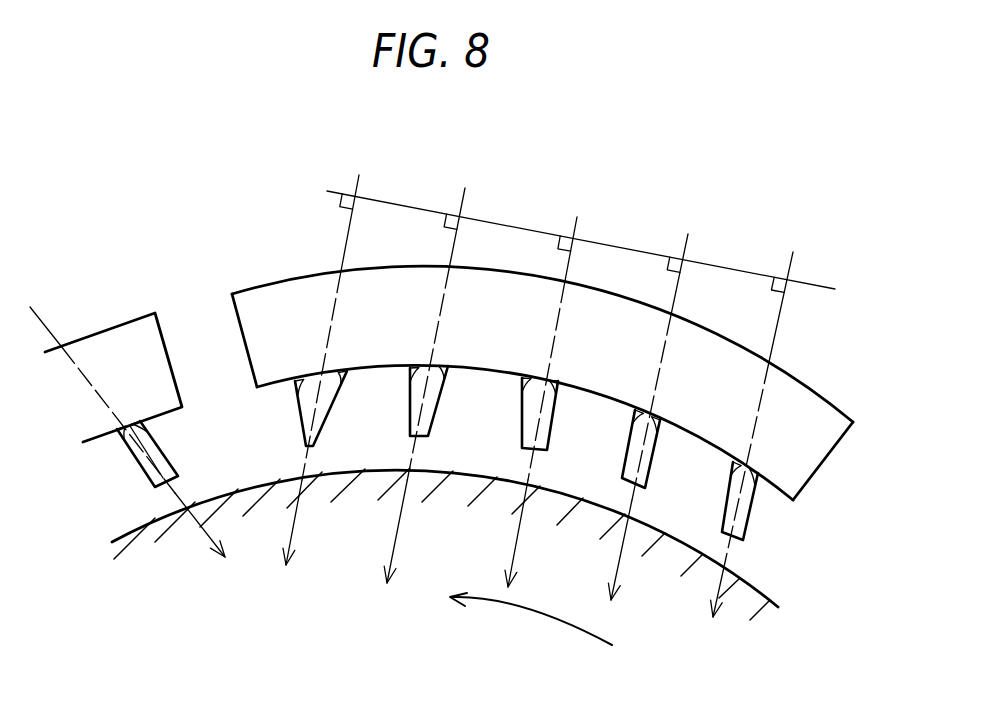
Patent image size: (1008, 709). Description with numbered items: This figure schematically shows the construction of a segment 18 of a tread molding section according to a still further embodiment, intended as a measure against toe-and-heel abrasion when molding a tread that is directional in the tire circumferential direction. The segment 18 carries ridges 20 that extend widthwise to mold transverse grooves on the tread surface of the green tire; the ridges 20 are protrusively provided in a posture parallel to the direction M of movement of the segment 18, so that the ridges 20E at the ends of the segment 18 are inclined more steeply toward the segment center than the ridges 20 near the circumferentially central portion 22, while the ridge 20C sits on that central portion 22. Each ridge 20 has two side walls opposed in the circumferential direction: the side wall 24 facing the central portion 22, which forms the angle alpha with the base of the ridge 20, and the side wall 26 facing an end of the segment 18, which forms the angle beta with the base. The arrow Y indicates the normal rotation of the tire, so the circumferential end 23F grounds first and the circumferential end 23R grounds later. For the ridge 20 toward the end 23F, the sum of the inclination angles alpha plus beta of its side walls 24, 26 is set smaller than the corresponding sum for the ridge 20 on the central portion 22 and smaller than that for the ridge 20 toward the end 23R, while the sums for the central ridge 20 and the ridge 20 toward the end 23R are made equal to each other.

The segment 18 is at (106, 325).
The circumferentially central portion 22 is at (585, 303).
The circumferential end 23F is at (268, 290).
The circumferential end 23R is at (798, 395).
The side wall 24 is at (152, 473).
The side wall 26 is at (172, 461).
The ridge 20 is at (428, 440).
The ridge at the end 20E is at (155, 485).
The center tooth 20C is at (547, 452).
The direction of movement M is at (515, 568).
The normal rotation of a tire Y is at (545, 615).